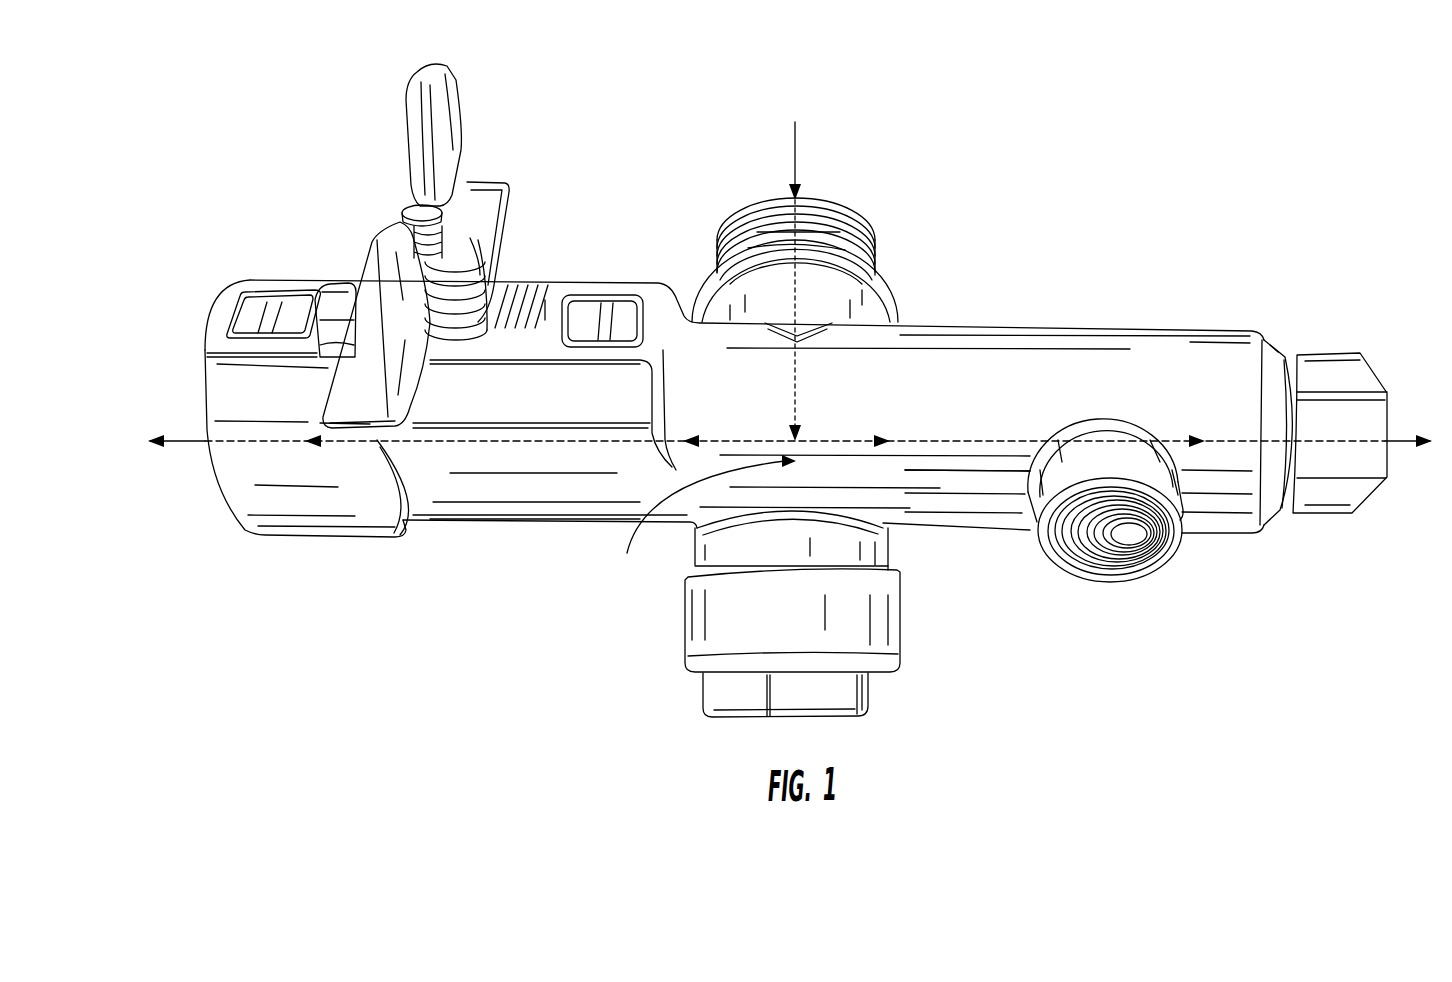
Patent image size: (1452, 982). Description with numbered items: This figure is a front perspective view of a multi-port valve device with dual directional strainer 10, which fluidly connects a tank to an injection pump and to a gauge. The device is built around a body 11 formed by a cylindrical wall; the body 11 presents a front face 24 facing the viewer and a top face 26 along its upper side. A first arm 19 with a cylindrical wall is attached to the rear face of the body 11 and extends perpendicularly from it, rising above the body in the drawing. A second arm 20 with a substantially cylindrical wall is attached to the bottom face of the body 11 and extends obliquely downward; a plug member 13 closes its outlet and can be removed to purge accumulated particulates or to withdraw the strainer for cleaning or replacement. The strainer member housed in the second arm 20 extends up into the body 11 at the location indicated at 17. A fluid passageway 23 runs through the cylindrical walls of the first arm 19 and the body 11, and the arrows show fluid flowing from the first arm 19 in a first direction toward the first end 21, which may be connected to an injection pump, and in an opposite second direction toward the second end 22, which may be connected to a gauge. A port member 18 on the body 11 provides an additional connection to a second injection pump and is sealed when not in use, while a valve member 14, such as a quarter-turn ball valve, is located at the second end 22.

The multi-port valve device with dual directional strainer 10 is at (1160, 200).
The body 11 is at (985, 373).
The plug member 13 is at (723, 690).
The valve member 14 is at (537, 285).
The location where strainer member extends into body 17 is at (702, 523).
The port member 18 is at (1100, 467).
The first arm 19 is at (860, 295).
The second arm 20 is at (837, 573).
The first end 21 is at (1357, 521).
The second end 22 is at (198, 460).
The fluid passageway 23 is at (195, 441).
The front face 24 is at (970, 484).
The top face 26 is at (1172, 348).